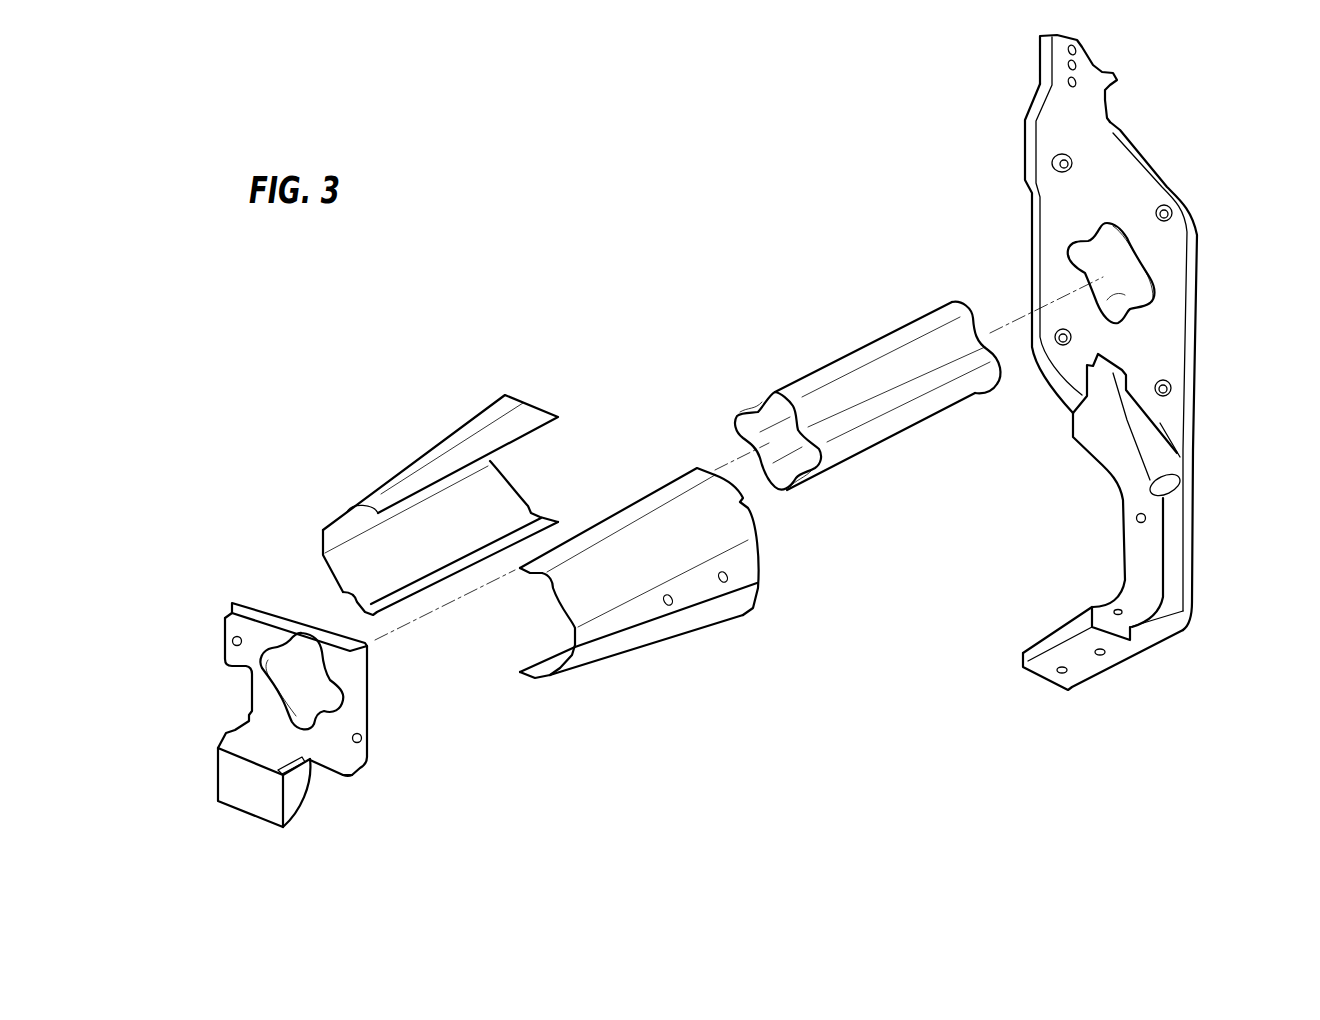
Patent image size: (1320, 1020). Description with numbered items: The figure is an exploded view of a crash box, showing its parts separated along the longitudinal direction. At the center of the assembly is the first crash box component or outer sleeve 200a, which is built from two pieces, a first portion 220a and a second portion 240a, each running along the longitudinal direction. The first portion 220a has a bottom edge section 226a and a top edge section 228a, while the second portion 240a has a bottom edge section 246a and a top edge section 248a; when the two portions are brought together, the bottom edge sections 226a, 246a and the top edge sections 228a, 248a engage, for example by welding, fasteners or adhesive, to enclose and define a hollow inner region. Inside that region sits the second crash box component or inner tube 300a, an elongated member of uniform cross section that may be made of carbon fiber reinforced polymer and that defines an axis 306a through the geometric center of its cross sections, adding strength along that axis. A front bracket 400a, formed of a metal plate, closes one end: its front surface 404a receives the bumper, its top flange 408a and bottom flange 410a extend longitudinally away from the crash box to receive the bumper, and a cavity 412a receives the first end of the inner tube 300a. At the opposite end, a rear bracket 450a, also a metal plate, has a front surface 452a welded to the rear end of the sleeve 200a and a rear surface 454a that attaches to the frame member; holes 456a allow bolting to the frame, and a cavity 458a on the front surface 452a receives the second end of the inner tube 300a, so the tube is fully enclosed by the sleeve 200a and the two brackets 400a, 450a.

The first crash box component 200a is at (536, 532).
The first portion 220a is at (638, 598).
The bottom edge section 226a is at (522, 672).
The top edge section 228a is at (525, 573).
The second portion 240a is at (431, 451).
The bottom edge section 246a is at (362, 614).
The top edge section 248a is at (338, 520).
The second crash box component 300a is at (739, 458).
The axis 306a is at (727, 463).
The front bracket 400a is at (269, 684).
The front surface 404a is at (264, 693).
The top flange 408a is at (241, 601).
The bottom flange 410a is at (344, 760).
The cavity 412a is at (275, 722).
The rear bracket 450a is at (1106, 362).
The front surface 452a is at (1062, 222).
The rear surface 454a is at (1199, 292).
The holes 456a is at (1054, 157).
The cavity 458a is at (1120, 325).